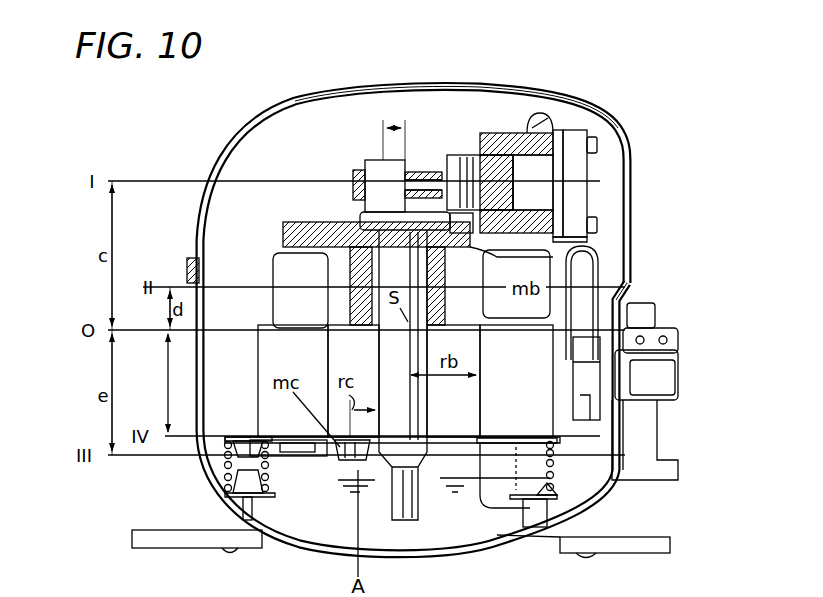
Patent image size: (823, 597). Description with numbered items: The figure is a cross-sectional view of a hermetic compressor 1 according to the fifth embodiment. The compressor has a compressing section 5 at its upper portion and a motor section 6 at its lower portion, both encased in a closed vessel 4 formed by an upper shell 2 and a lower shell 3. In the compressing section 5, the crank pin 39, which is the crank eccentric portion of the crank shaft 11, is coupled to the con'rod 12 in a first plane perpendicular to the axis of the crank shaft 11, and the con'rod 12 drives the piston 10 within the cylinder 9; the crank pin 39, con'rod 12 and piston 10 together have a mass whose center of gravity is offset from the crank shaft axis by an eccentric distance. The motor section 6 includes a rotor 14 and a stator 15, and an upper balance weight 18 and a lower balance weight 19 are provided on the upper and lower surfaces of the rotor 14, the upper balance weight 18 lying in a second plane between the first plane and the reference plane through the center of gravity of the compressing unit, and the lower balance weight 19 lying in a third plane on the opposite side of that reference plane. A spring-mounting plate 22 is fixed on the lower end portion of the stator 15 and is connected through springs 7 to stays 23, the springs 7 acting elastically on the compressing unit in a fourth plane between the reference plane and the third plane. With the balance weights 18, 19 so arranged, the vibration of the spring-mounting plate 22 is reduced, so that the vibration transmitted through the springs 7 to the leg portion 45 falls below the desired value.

The hermetic compressor 1 is at (637, 168).
The upper shell 2 is at (444, 92).
The lower shell 3 is at (224, 500).
The closed vessel 4 is at (627, 287).
The compressing section 5 is at (467, 243).
The motor section 6 is at (563, 387).
The springs 7 is at (226, 470).
The cylinder 9 is at (553, 128).
The piston 10 is at (502, 143).
The crank shaft 11 is at (360, 225).
The con'rod 12 is at (427, 172).
The rotor 14 is at (463, 423).
The stator 15 is at (528, 340).
The upper balance weight 18 is at (567, 233).
The lower balance weight 19 is at (327, 490).
The spring-mounting plate 22 is at (249, 437).
The stays 23 is at (236, 520).
The crank pin 39 is at (373, 160).
The leg portion 45 is at (626, 548).